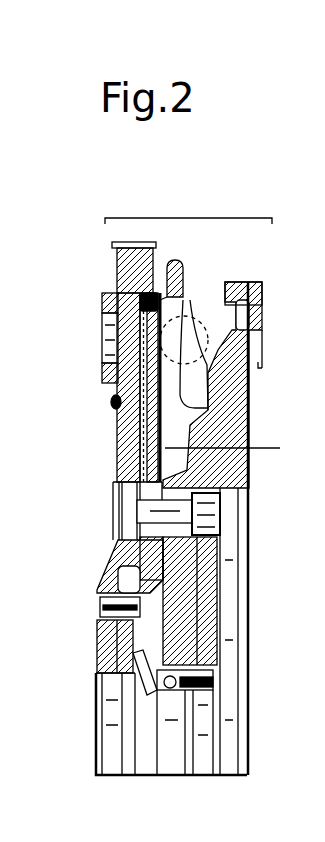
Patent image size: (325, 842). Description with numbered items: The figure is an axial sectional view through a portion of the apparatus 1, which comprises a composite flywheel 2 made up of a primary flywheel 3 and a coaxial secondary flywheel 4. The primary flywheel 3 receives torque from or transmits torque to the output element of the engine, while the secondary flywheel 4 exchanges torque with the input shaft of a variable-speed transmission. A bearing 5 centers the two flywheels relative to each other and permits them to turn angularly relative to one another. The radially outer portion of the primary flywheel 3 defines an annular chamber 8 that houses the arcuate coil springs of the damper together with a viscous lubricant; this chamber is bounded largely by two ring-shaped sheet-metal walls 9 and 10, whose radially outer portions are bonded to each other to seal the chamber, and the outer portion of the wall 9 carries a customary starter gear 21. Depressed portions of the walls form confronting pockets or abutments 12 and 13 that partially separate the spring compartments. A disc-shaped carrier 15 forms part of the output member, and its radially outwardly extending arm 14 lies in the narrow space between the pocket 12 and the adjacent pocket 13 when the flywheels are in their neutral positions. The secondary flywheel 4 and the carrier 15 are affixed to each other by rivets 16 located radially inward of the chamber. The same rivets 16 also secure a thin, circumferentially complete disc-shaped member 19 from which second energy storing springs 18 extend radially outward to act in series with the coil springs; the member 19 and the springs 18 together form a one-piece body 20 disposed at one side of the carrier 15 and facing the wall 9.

The apparatus 1 is at (263, 202).
The composite flywheel 2 is at (188, 205).
The primary flywheel 3 is at (115, 293).
The secondary flywheel 4 is at (233, 423).
The bearing 5 is at (192, 690).
The annular chamber 8 is at (178, 283).
The ring-shaped wall 9 is at (122, 425).
The ring-shaped wall 10 is at (213, 392).
The abutment 12 is at (99, 330).
The abutment 13 is at (178, 346).
The arm 14 is at (263, 282).
The disc-shaped carrier 15 is at (239, 440).
The rivet 16 is at (250, 523).
The second energy storing element 18 is at (141, 457).
The disc-shaped member 19 is at (120, 548).
The one-piece body 20 is at (110, 383).
The starter gear 21 is at (130, 272).